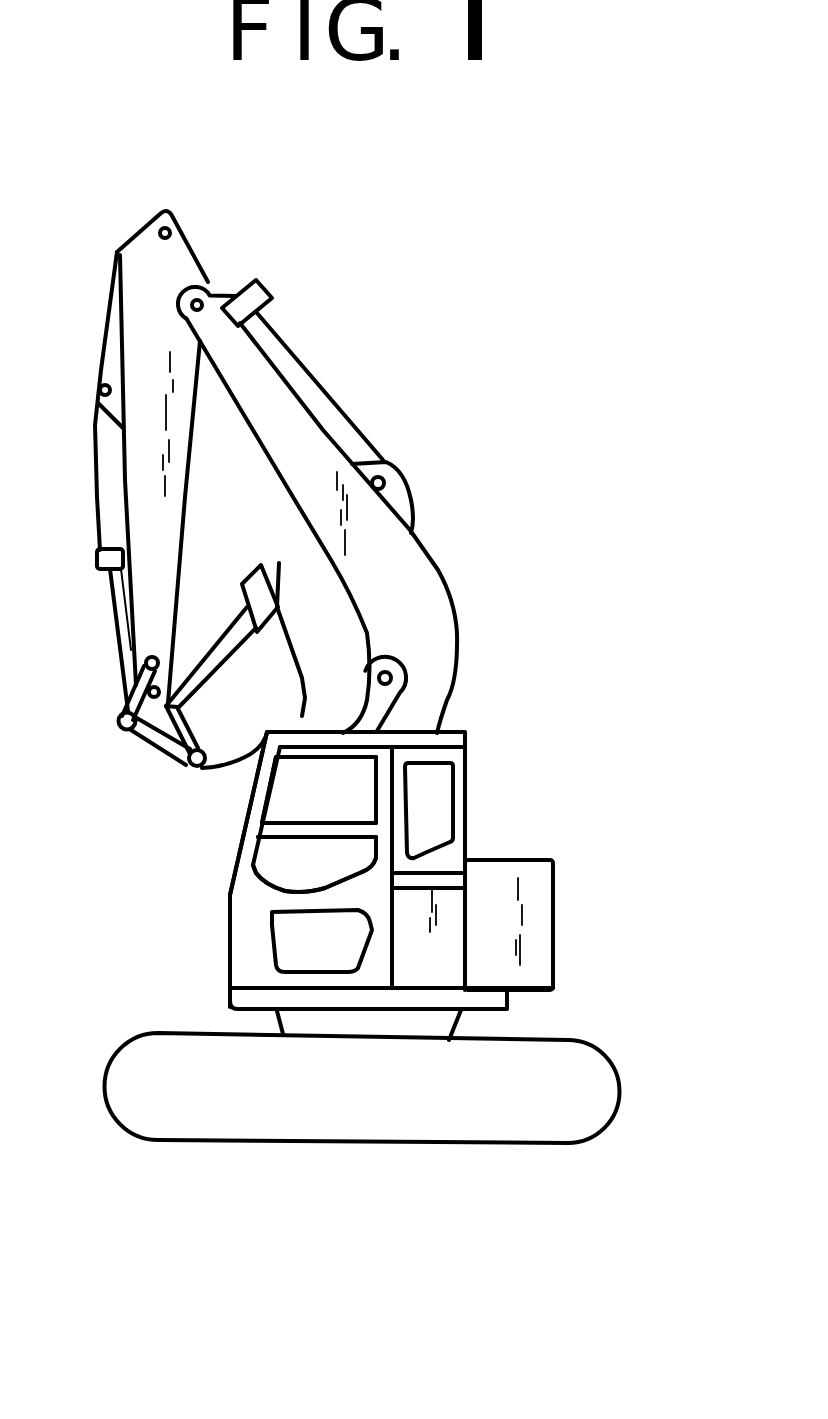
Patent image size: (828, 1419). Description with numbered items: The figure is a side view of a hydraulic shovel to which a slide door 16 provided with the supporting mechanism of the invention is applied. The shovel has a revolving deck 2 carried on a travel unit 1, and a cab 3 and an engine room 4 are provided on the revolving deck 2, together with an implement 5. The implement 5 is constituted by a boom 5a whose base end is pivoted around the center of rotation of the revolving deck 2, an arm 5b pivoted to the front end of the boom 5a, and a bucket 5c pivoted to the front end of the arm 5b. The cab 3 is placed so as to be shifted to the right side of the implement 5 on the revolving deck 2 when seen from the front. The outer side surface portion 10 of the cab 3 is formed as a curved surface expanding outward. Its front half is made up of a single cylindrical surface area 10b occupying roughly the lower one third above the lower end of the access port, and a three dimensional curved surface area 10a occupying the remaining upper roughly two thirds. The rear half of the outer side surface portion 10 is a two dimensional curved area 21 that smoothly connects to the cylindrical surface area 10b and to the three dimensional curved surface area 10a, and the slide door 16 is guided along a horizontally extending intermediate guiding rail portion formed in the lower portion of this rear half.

The travel unit 1 is at (622, 1094).
The revolving deck 2 is at (500, 1000).
The cab 3 is at (466, 793).
The engine room 4 is at (540, 892).
The implement 5 is at (533, 393).
The boom 5a is at (437, 635).
The arm 5b is at (163, 427).
The bucket 5c is at (268, 665).
The outer side surface portion 10 is at (244, 994).
The three dimensional curved surface area 10a is at (297, 814).
The cylindrical surface area 10b is at (262, 945).
The slide door 16 is at (246, 916).
The two dimensional curved area 21 is at (451, 907).